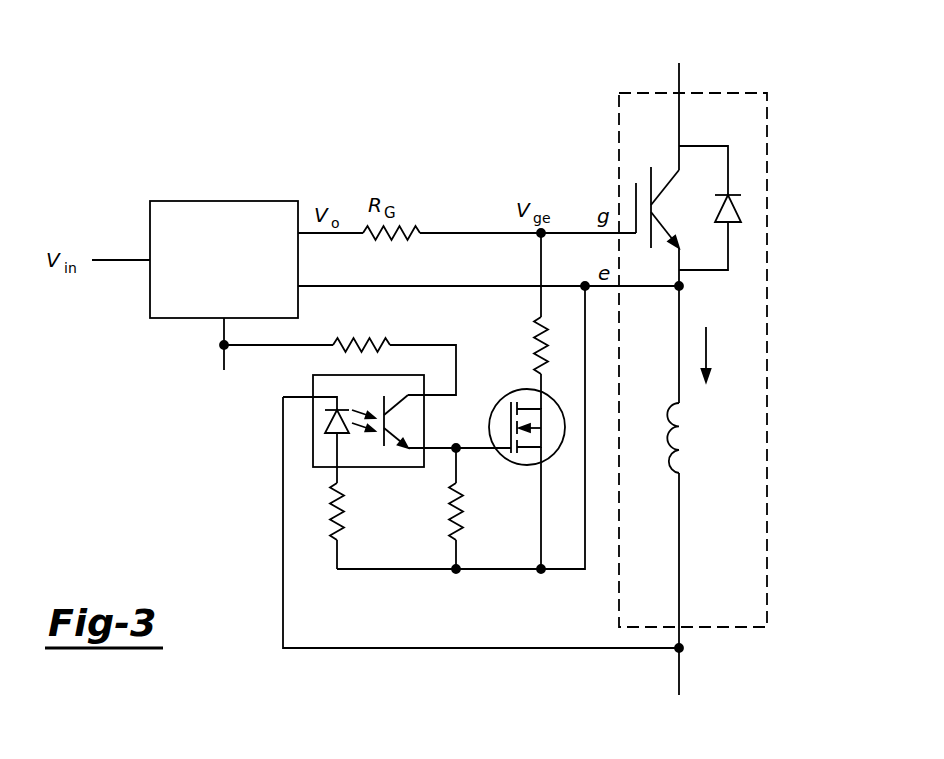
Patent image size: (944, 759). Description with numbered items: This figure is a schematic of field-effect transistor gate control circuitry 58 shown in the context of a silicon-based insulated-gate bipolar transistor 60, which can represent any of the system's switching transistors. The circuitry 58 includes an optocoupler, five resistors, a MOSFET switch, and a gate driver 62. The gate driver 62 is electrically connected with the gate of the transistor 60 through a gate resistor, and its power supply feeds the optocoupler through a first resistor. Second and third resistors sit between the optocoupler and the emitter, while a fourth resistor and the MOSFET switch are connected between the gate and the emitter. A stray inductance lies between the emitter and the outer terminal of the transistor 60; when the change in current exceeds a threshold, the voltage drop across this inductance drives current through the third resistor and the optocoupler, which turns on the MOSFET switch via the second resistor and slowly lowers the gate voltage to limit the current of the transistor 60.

The circuitry 58 is at (176, 442).
The IGBT 60 is at (740, 93).
The gate driver 62 is at (150, 217).